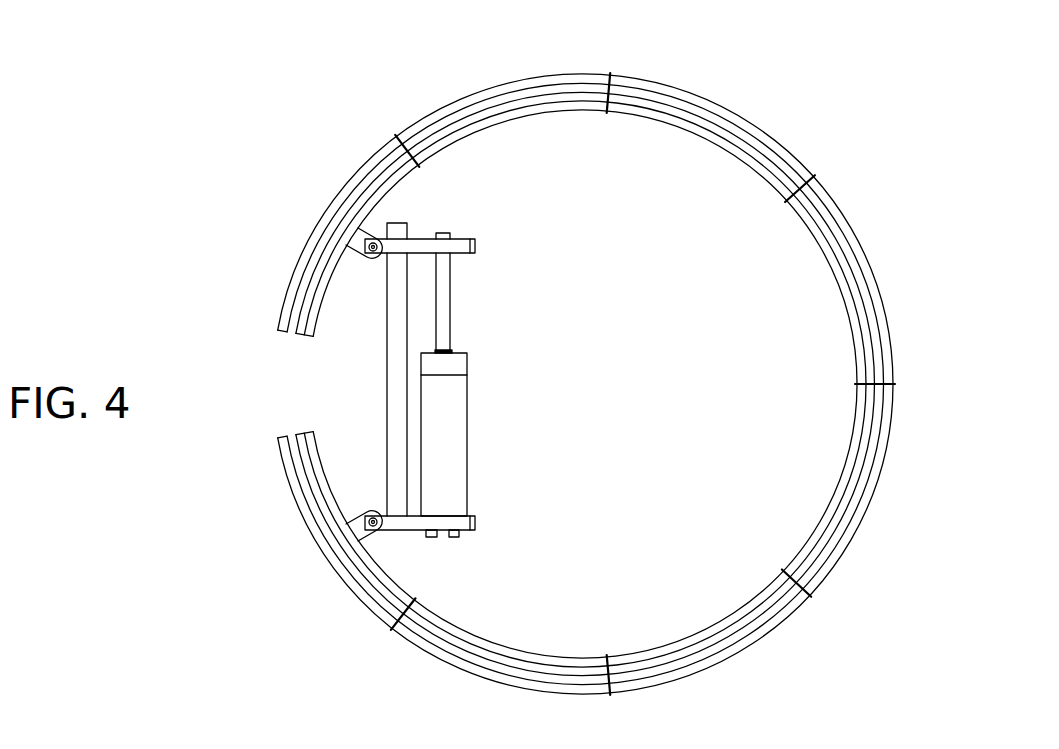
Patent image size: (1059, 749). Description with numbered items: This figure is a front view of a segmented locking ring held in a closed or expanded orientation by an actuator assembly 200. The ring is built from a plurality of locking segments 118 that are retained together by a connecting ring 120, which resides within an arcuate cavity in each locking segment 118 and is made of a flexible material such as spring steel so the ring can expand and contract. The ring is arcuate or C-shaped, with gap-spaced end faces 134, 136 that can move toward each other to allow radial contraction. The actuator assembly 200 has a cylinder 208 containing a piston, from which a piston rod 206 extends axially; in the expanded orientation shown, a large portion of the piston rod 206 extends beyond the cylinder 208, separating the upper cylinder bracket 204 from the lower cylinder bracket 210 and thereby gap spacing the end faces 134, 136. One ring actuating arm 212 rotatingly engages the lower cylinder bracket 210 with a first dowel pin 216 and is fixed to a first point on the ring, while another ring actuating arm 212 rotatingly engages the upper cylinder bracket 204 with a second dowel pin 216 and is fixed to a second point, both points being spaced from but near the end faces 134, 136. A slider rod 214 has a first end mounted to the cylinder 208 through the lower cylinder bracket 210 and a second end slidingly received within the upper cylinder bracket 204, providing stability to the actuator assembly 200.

The locking segment 118 is at (836, 214).
The connecting ring 120 is at (615, 103).
The end face 134 is at (285, 333).
The end face 136 is at (281, 435).
The actuator assembly 200 is at (504, 352).
The upper cylinder bracket 204 is at (425, 247).
The piston rod 206 is at (447, 283).
The cylinder 208 is at (460, 413).
The lower cylinder bracket 210 is at (460, 521).
The ring actuating arm 212 is at (367, 230).
The slider rod 214 is at (393, 367).
The dowel pin 216 is at (366, 237).